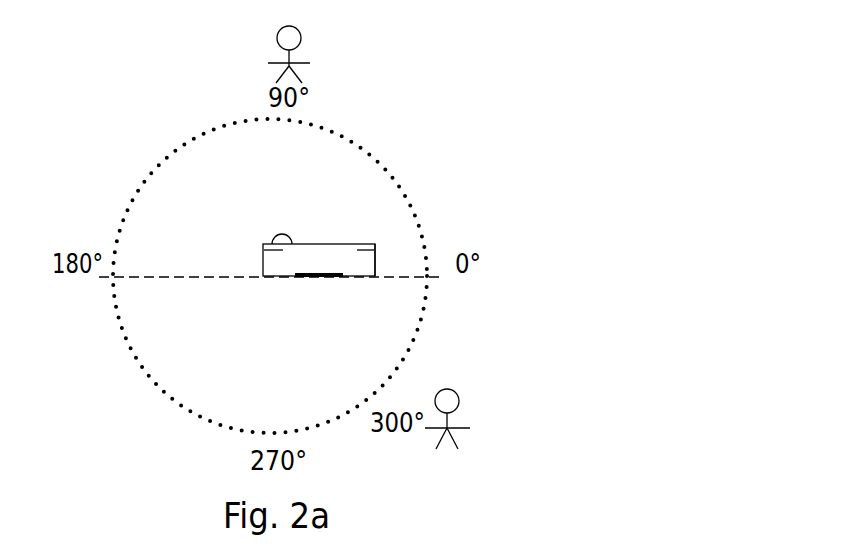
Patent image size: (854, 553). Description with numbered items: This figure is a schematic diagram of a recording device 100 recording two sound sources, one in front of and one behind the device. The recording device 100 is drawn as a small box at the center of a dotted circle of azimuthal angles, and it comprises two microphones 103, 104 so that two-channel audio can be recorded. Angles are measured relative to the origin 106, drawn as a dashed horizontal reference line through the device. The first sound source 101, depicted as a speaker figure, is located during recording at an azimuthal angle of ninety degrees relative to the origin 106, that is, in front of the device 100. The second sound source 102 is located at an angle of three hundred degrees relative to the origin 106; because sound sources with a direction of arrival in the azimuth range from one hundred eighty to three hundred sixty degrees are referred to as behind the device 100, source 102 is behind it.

The recording device 100 is at (319, 259).
The source 101 is at (301, 37).
The source 102 is at (459, 401).
The microphone 103 is at (272, 245).
The microphone 104 is at (375, 251).
The origin 106 is at (242, 277).